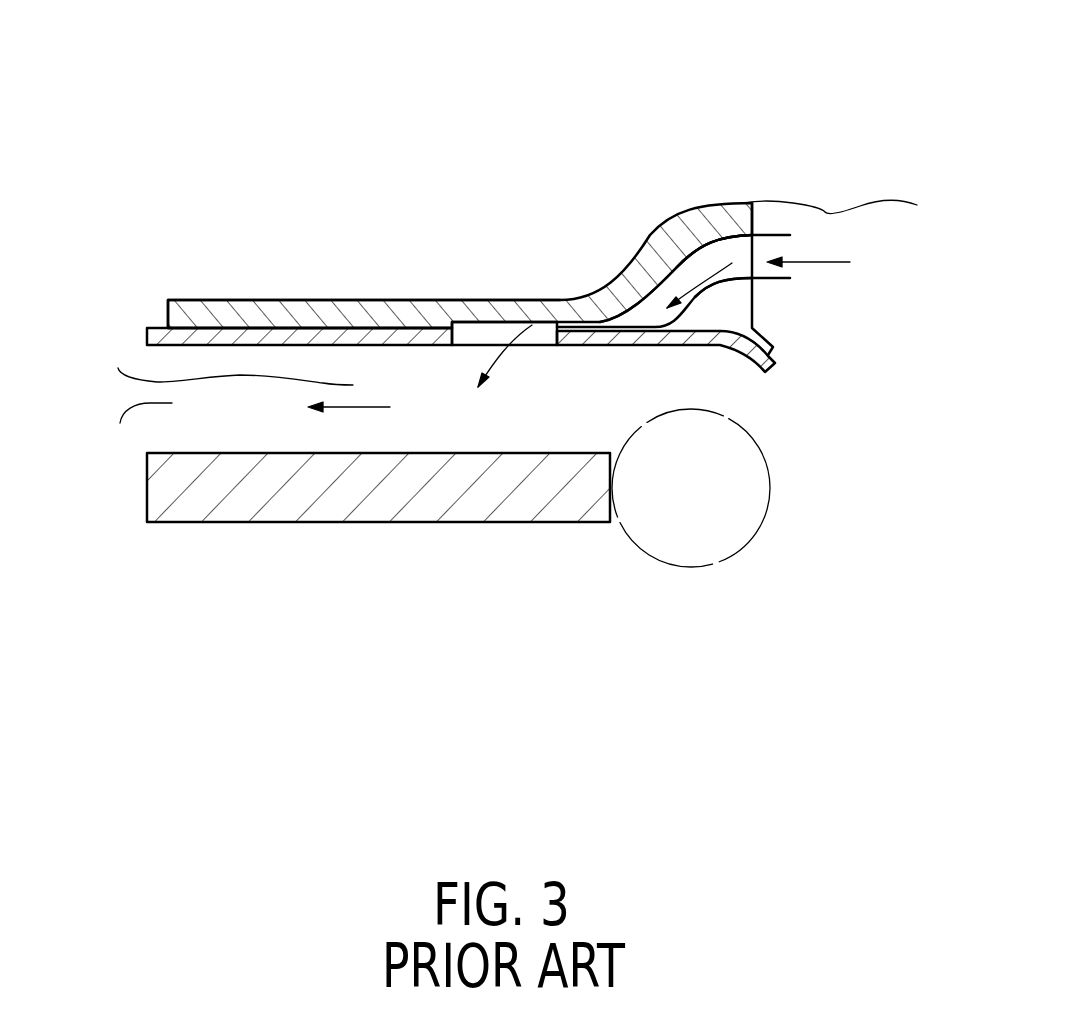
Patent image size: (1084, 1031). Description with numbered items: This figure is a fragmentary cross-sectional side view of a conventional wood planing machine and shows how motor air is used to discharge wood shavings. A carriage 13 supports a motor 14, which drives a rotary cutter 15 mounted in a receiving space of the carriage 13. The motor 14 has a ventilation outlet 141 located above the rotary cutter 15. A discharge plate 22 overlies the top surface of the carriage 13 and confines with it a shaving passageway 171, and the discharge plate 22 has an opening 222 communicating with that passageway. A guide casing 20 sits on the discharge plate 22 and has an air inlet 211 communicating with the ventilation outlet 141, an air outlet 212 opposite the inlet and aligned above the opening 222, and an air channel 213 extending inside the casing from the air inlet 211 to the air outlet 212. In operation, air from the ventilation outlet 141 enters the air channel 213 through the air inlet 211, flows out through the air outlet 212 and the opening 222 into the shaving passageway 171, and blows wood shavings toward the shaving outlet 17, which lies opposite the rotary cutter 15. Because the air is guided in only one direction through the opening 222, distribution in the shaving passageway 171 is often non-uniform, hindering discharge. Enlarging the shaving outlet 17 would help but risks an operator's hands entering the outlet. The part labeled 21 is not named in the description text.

The carriage 13 is at (322, 498).
The motor 14 is at (860, 230).
The ventilation outlet 141 is at (770, 243).
The rotary cutter 15 is at (723, 562).
The shaving outlet 17 is at (120, 423).
The shaving passageway 171 is at (118, 368).
The guide casing 20 is at (655, 237).
The upper plate 21 is at (305, 313).
The air inlet 211 is at (740, 260).
The air outlet 212 is at (553, 328).
The air channel 213 is at (710, 258).
The discharge plate 22 is at (237, 337).
The opening 222 is at (470, 337).